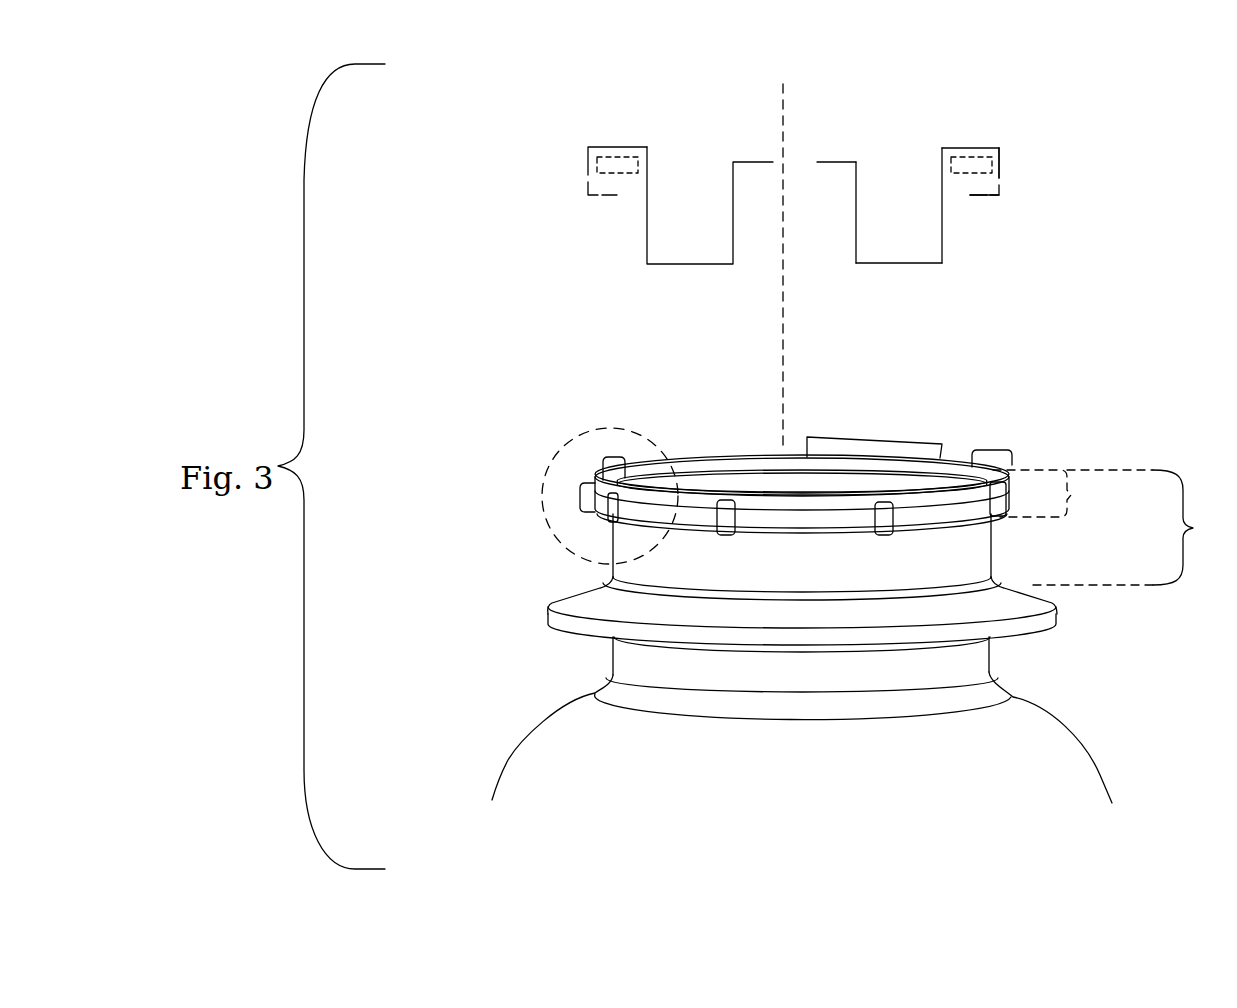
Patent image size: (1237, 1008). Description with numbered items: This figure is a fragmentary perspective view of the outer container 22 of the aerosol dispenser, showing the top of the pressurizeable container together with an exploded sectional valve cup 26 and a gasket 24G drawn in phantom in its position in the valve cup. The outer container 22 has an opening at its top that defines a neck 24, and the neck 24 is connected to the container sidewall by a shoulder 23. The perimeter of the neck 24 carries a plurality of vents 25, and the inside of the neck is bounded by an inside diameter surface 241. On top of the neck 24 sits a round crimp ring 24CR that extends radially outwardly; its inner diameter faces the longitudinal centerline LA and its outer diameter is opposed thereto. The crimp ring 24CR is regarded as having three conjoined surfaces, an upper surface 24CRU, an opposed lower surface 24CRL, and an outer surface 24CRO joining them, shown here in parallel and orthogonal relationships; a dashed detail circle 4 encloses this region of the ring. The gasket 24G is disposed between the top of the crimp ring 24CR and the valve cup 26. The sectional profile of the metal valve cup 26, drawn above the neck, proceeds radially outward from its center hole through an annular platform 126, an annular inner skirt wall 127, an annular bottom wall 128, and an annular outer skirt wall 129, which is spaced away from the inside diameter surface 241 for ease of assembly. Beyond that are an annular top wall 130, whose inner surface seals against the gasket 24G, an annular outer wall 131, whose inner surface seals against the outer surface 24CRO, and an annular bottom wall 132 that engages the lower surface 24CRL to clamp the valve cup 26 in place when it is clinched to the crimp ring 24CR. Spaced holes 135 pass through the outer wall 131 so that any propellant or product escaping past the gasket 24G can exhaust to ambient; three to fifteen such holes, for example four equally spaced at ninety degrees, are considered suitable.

The longitudinal centerline LA is at (783, 253).
The valve cup 26 is at (852, 270).
The annular platform 126 is at (833, 160).
The annular inner skirt wall 127 is at (855, 215).
The annular bottom wall 128 is at (880, 264).
The annular outer skirt wall 129 is at (942, 203).
The annular top wall 130 is at (962, 148).
The annular outer wall 131 is at (999, 155).
The annular bottom wall 132 is at (998, 195).
The spaced holes 135 is at (587, 175).
The gasket 24G is at (616, 153).
The outer container 22 is at (741, 676).
The shoulder 23 is at (504, 762).
The neck 24 is at (836, 474).
The crimp ring 24CR is at (860, 501).
The upper surface 24CRU is at (615, 457).
The outer surface 24CRO is at (582, 493).
The lower surface 24CRL is at (612, 533).
The inside diameter surface 241 is at (745, 483).
The vents 25 is at (722, 515).
The detail view circle 4 is at (593, 428).